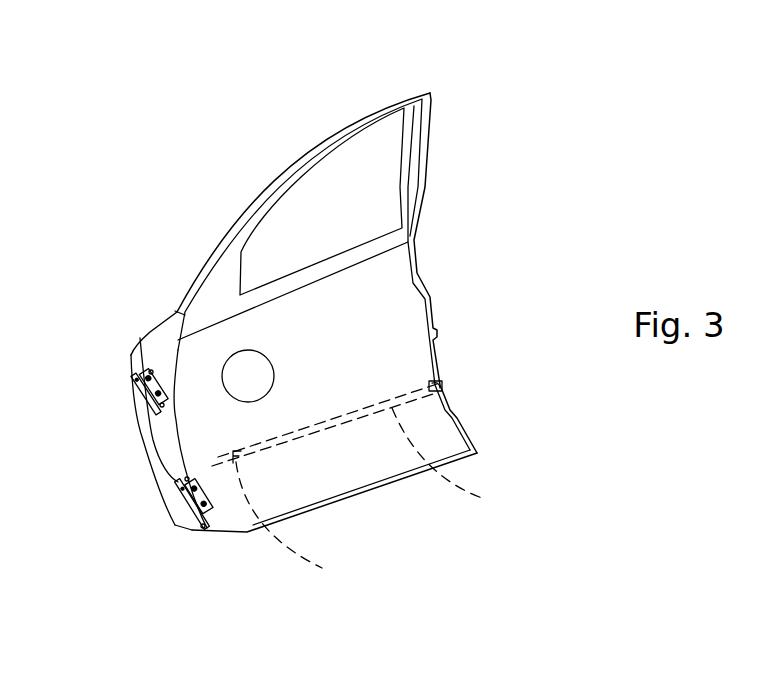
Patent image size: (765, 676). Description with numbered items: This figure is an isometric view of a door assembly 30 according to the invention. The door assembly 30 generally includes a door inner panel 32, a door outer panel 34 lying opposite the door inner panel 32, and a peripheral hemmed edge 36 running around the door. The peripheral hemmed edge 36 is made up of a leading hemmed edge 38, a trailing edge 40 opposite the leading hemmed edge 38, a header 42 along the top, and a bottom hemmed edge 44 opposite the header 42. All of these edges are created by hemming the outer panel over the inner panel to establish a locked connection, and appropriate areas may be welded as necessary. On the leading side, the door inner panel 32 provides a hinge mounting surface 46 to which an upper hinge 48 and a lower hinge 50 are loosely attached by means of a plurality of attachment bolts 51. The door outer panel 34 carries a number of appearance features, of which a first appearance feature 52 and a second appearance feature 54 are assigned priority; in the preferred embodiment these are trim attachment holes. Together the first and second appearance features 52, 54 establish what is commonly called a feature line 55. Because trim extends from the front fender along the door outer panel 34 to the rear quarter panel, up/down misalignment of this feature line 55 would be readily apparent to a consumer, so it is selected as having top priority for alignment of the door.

The door assembly 30 is at (278, 103).
The door inner panel 32 is at (426, 365).
The door outer panel 34 is at (175, 311).
The peripheral hemmed edge 36 is at (263, 193).
The leading hemmed edge 38 is at (152, 468).
The trailing edge 40 is at (431, 297).
The header 42 is at (406, 95).
The bottom hemmed edge 44 is at (396, 484).
The hinge mounting surface 46 is at (153, 430).
The upper hinge 48 is at (150, 376).
The lower hinge 50 is at (187, 493).
The attachment bolts 51 is at (150, 368).
The first appearance feature 52 is at (293, 520).
The second appearance feature 54 is at (446, 378).
The feature line 55 is at (484, 498).